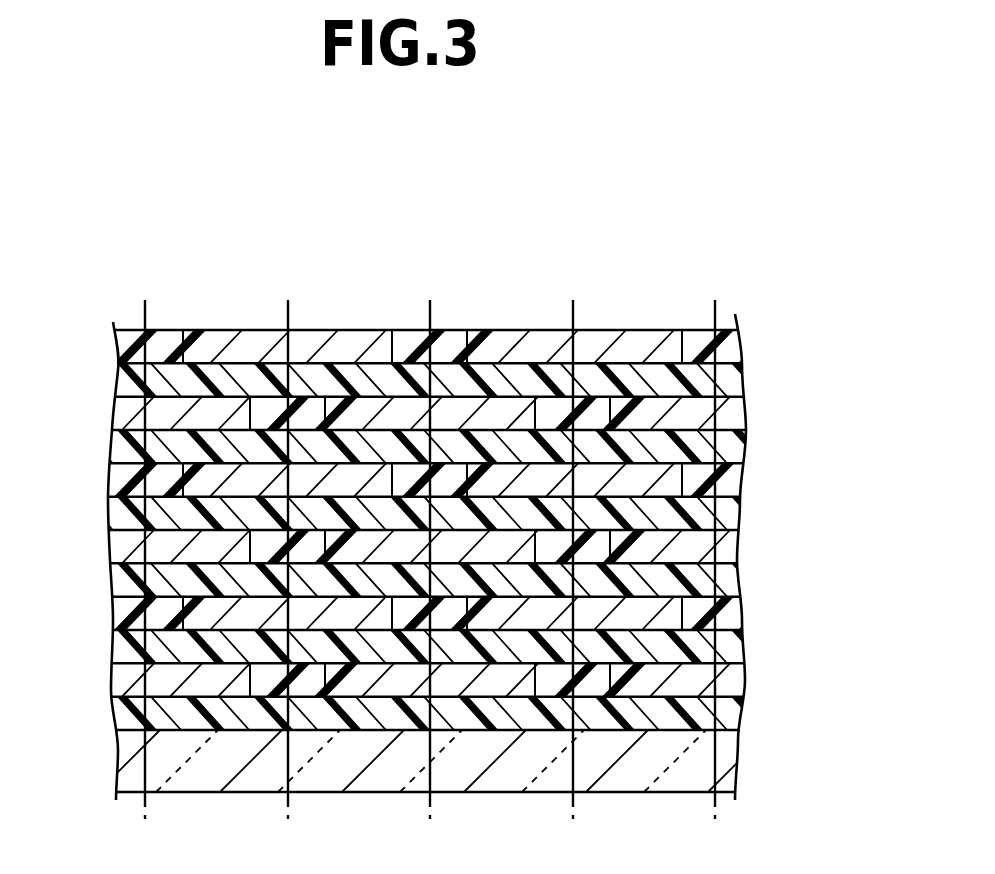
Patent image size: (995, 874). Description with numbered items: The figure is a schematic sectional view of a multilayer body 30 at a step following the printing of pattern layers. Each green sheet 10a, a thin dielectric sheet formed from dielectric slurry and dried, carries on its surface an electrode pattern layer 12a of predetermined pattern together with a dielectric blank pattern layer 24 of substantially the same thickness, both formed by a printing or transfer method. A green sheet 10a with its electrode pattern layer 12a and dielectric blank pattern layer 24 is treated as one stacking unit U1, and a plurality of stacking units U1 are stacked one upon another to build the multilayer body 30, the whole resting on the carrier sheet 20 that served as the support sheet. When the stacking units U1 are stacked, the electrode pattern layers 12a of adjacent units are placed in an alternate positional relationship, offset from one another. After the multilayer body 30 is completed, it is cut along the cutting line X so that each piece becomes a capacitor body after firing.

The multilayer body 30 is at (786, 320).
The dielectric blank pattern layer 24 is at (732, 612).
The green sheet 10a is at (727, 642).
The electrode pattern layer 12a is at (727, 670).
The carrier sheet 20 is at (640, 772).
The stacking unit U1 is at (85, 465).
The cutting line X is at (714, 312).